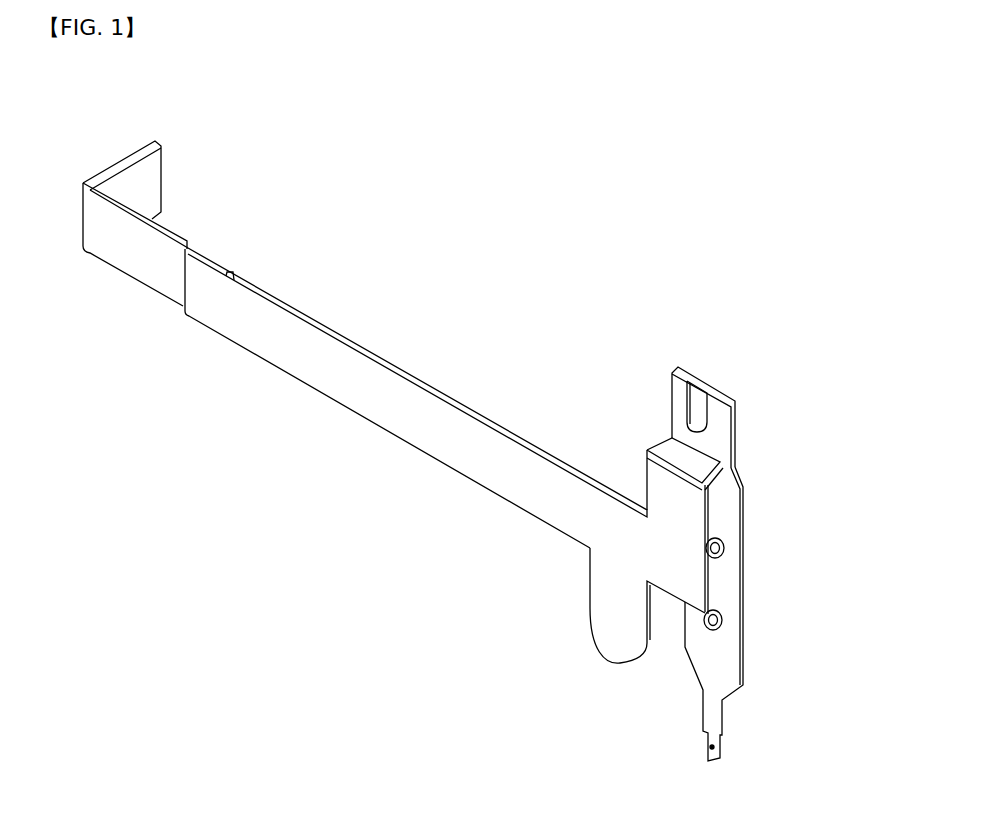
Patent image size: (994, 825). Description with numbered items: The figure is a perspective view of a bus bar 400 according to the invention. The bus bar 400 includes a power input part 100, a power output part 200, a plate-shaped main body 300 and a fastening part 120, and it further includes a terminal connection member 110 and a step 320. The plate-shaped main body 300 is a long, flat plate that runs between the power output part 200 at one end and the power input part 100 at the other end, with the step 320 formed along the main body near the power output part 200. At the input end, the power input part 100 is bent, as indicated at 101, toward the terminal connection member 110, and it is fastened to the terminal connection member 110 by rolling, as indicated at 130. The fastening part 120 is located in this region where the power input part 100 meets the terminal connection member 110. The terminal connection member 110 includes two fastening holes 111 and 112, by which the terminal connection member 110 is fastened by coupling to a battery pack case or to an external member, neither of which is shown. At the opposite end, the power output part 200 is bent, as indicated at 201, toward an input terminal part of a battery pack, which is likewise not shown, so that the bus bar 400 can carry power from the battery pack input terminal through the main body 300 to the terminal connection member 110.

The bus bar 400 is at (73, 131).
The power output part 200 is at (148, 223).
The bend of the power output part 201 is at (70, 213).
The plate-shaped main body 300 is at (445, 440).
The step 320 is at (222, 246).
The power input part 100 is at (784, 564).
The rolled fastening of the power input part 130 is at (697, 410).
The bend of the power input part 101 is at (692, 462).
The fastening part 120 is at (718, 514).
The fastening hole 111 is at (724, 551).
The terminal connection member 110 is at (765, 614).
The fastening hole 112 is at (774, 625).